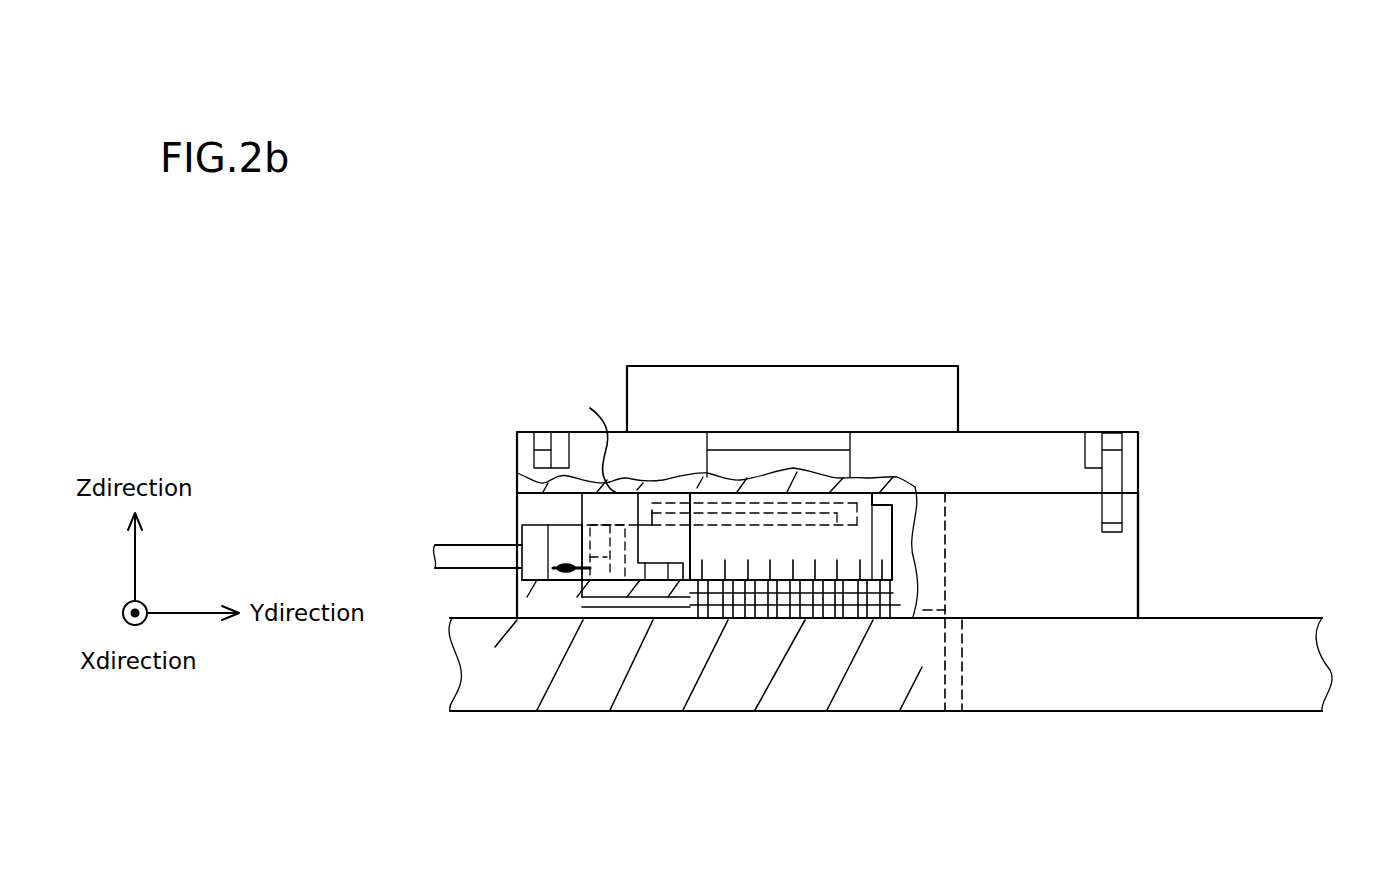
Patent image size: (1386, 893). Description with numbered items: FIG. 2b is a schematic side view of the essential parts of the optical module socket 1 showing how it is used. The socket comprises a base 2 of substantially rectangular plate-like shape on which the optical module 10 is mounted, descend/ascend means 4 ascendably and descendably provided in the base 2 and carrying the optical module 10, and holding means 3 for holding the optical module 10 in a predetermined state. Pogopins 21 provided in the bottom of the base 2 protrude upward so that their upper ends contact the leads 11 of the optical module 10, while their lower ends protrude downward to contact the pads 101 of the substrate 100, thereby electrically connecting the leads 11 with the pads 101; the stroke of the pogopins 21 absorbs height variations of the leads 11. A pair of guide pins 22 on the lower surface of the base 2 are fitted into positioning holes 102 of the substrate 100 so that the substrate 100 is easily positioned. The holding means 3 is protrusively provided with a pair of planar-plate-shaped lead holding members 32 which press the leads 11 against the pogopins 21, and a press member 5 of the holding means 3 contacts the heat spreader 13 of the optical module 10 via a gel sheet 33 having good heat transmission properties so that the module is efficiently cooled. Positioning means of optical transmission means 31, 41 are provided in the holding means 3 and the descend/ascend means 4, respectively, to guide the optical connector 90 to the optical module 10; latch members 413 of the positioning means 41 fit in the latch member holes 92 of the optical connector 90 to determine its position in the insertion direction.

The optical module socket 1 is at (1292, 336).
The base 2 is at (1140, 592).
The holding means 3 is at (1063, 432).
The descend/ascend means 4 is at (648, 597).
The upper member 5 is at (925, 377).
The optical module 10 is at (899, 549).
The leads 11 is at (828, 568).
The heat spreader 13 is at (660, 522).
The pogopins 21 is at (893, 617).
The guide pins 22 is at (965, 620).
The positioning means of optical transmission means 31 is at (582, 513).
The lead holding members 32 is at (837, 567).
The gel sheet 33 is at (594, 434).
The positioning means of optical transmission means 41 is at (600, 580).
The optical connector 90 is at (545, 580).
The latch member holes 92 is at (523, 560).
The substrate 100 is at (1277, 695).
The pads 101 is at (727, 612).
The positioning holes 102 is at (948, 710).
The latch members 413 is at (575, 575).